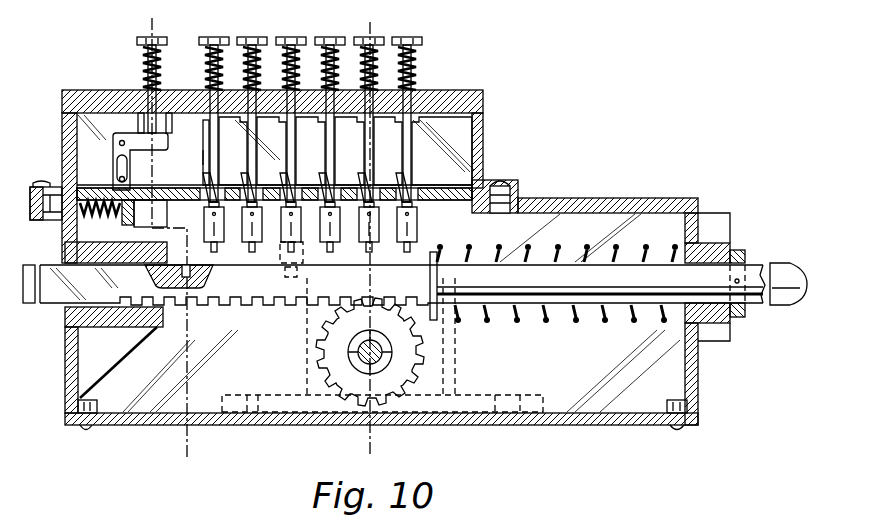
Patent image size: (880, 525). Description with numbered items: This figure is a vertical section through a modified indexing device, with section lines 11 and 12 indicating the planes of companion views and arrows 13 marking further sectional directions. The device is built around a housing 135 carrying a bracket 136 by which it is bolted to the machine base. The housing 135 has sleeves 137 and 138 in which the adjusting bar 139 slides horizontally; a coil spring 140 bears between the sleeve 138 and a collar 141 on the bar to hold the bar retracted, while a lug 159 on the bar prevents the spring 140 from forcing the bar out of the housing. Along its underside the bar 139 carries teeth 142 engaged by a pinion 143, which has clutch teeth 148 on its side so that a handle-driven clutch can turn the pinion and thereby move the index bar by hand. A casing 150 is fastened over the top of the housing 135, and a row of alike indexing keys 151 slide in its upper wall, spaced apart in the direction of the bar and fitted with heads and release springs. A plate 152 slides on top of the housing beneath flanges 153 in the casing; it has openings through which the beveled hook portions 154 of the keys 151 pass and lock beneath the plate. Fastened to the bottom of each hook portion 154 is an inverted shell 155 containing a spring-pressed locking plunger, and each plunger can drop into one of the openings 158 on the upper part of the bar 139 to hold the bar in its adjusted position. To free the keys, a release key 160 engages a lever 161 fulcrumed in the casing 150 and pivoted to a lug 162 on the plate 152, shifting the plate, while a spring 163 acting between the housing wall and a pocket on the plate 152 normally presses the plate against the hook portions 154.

The section line 11- 11 is at (385, 22).
The section line 12- 12 is at (133, 23).
The section line 13- 13 is at (210, 157).
The housing 135 is at (660, 201).
The bracket 136 is at (264, 426).
The sleeve 137 is at (66, 357).
The sleeve 138 is at (712, 322).
The adjusting bar 139 is at (52, 300).
The coil spring 140 is at (568, 318).
The collar 141 is at (437, 318).
The teeth 142 is at (272, 304).
The pinion 143 is at (333, 358).
The clutch teeth 148 is at (392, 370).
The casing 150 is at (474, 134).
The indexing keys 151 is at (216, 40).
The plate 152 is at (476, 188).
The flanges 153 is at (463, 172).
The beveled hook portions 154 is at (200, 196).
The inverted shell 155 is at (418, 231).
The openings 158 is at (150, 278).
The lug 159 is at (736, 252).
The release key 160 is at (146, 55).
The lever 161 is at (141, 138).
The lug 162 is at (115, 168).
The spring 163 is at (95, 222).